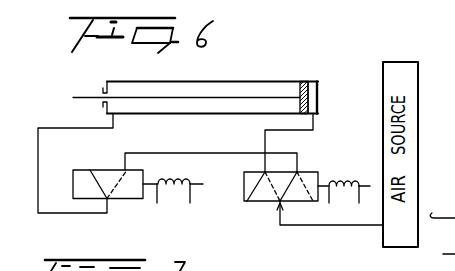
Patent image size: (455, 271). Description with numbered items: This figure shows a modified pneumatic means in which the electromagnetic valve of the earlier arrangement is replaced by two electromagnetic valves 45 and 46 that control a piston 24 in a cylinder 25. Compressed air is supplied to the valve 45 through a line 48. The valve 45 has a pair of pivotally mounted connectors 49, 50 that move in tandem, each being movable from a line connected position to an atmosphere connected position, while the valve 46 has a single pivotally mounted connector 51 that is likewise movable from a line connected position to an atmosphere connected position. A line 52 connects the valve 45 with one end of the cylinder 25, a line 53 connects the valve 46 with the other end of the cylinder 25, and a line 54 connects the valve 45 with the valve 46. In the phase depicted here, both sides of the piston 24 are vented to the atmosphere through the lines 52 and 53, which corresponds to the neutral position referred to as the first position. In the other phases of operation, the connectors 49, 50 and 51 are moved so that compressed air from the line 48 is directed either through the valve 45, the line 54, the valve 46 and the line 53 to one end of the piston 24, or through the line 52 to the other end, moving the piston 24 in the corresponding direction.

The piston 24 is at (265, 98).
The cylinder 25 is at (240, 81).
The electromagnetic valve 45 is at (321, 168).
The electromagnetic valve 46 is at (100, 164).
The line 48 is at (345, 226).
The pivotally mounted connector 49 is at (257, 195).
The pivotally mounted connector 50 is at (293, 197).
The pivotally mounted connector 51 is at (99, 185).
The line 52 is at (265, 142).
The line 53 is at (38, 141).
The line 54 is at (191, 153).